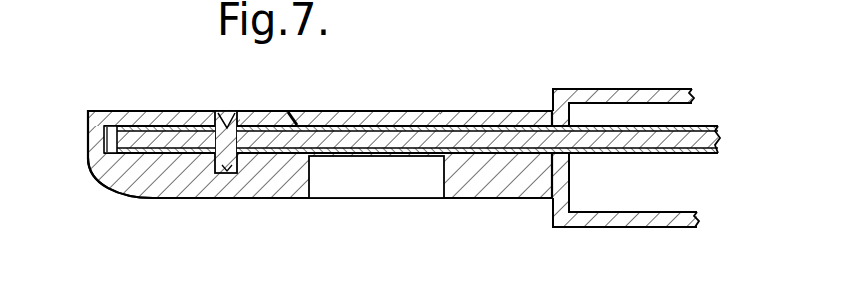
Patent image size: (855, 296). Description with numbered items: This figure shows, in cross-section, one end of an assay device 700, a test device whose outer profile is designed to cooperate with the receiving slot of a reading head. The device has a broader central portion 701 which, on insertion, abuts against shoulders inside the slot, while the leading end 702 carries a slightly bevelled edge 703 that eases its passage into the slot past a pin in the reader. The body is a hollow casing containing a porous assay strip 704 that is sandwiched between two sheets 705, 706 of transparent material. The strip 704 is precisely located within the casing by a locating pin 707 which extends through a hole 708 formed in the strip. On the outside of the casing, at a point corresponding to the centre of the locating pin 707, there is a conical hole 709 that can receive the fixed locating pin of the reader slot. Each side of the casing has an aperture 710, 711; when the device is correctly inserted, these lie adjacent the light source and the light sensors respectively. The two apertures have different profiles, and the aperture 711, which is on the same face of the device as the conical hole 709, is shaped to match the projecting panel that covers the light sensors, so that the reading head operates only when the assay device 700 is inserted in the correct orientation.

The assay device 700 is at (486, 108).
The broader central portion 701 is at (589, 87).
The leading end 702 is at (138, 110).
The bevelled edge 703 is at (108, 183).
The porous assay strip 704 is at (720, 140).
The sheet of transparent material 705 is at (633, 124).
The sheet of transparent material 706 is at (655, 157).
The locating pin 707 is at (228, 166).
The hole 708 is at (242, 137).
The conical hole 709 is at (227, 124).
The aperture 710 is at (400, 173).
The aperture 711 is at (373, 117).